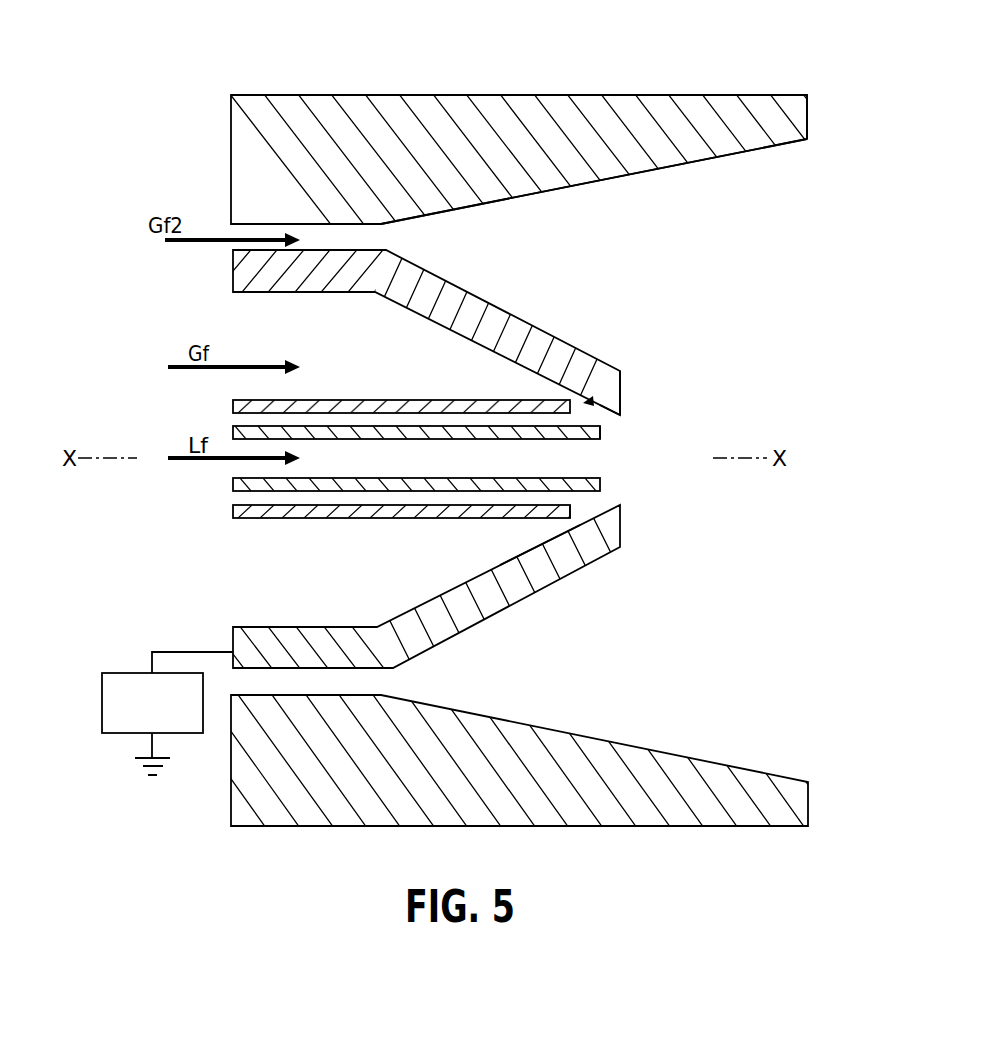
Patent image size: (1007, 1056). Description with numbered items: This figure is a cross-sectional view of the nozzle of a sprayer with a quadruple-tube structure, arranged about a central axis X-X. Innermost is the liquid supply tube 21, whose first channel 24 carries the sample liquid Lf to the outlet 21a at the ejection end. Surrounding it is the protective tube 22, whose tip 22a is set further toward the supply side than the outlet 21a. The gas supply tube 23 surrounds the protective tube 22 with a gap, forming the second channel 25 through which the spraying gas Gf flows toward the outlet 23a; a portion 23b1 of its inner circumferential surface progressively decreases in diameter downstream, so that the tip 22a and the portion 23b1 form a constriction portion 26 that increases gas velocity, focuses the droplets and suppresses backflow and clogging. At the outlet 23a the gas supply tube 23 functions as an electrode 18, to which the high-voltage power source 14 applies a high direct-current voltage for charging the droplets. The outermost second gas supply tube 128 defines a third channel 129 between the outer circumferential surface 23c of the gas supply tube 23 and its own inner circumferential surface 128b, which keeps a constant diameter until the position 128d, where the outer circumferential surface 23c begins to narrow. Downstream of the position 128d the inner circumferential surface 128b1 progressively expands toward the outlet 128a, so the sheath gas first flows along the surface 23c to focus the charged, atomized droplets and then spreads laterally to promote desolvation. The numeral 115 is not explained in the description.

The high-voltage power source 14 is at (100, 700).
The electrode 18 is at (628, 335).
The liquid supply tube 21 is at (233, 433).
The outlet of the liquid supply tube 21a is at (602, 432).
The protective tube 22 is at (233, 409).
The tip of the protective tube 22a is at (572, 514).
The gas supply tube 23 is at (233, 277).
The outlet of the gas supply tube 23a is at (622, 403).
The portion of the inner circumferential surface of the gas supply tube 23b1 is at (541, 546).
The outer circumferential surface of the gas supply tube 23c is at (358, 256).
The first channel 24 is at (237, 468).
The second channel 25 is at (258, 570).
The constriction portion 26 is at (624, 398).
The electrostatic coating apparatus 115 is at (146, 92).
The second gas supply tube 128 is at (421, 105).
The outlet of the second gas supply tube 128a is at (808, 118).
The inner circumferential surface of the second gas supply tube 128b is at (333, 226).
The inner circumferential surface of the second gas supply tube 128b1 is at (590, 185).
The position 128d is at (381, 226).
The third channel 129 is at (242, 233).